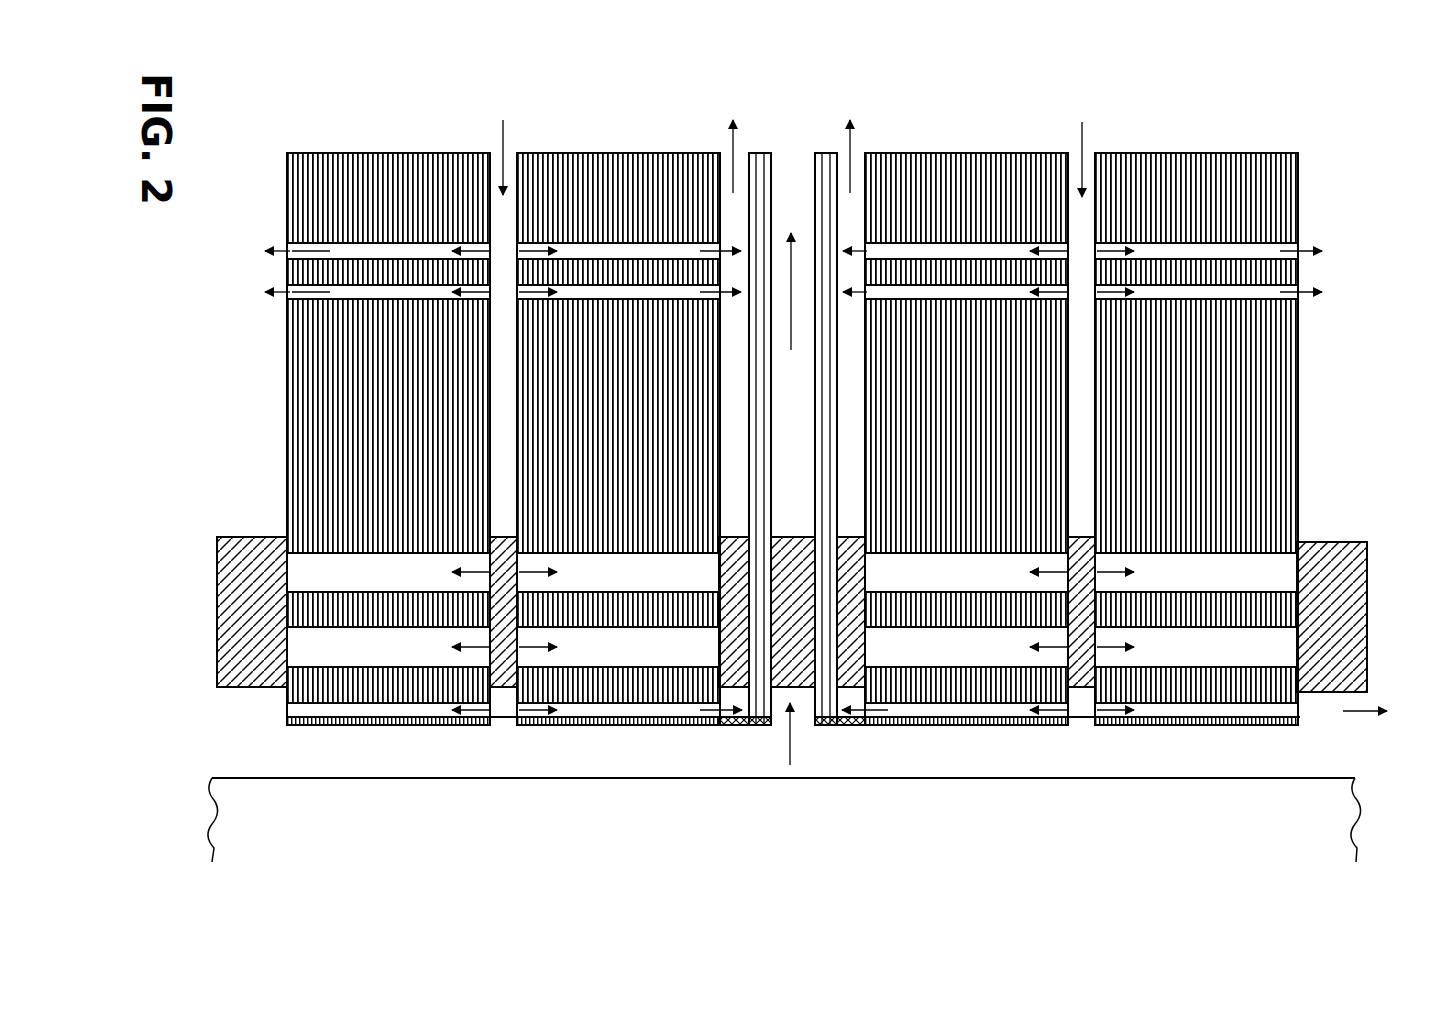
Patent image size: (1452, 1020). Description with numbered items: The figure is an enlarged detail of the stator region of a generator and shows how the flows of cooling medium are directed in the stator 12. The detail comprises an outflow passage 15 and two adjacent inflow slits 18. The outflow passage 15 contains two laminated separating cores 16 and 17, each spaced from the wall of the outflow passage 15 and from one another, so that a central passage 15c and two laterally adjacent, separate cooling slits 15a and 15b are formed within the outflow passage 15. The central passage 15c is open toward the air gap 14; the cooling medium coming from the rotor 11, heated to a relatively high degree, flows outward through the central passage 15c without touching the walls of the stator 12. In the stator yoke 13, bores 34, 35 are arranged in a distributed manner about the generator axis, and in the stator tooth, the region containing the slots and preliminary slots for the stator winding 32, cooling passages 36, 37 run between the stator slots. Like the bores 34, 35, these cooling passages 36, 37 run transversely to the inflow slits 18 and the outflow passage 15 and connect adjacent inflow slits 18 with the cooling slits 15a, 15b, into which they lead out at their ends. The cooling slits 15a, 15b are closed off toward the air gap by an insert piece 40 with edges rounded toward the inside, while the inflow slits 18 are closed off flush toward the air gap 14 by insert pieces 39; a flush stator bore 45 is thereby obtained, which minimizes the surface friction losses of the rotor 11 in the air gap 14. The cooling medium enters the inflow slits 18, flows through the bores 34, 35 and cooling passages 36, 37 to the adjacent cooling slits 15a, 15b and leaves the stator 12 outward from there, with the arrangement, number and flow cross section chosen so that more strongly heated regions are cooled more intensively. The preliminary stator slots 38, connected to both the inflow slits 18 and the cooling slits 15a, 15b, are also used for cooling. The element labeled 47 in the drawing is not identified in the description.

The rotor 11 is at (1197, 876).
The stator 12 is at (1358, 204).
The stator yoke 13 is at (1263, 462).
The air gap 14 is at (1265, 758).
The outflow passage 15 is at (822, 403).
The cooling slit 15a is at (726, 175).
The cooling slit 15b is at (857, 175).
The central passage 15c is at (792, 175).
The laminated separating core 16 is at (757, 330).
The laminated separating core 17 is at (826, 357).
The inflow slit 18 is at (499, 222).
The stator winding 32 is at (1340, 635).
The bore 34 is at (330, 248).
The bore 35 is at (333, 290).
The cooling passage 36 is at (313, 565).
The cooling passage 37 is at (313, 643).
The preliminary stator slot 38 is at (383, 705).
The insert piece 39 is at (505, 722).
The insert piece 40 is at (738, 727).
The flush stator bore 45 is at (607, 735).
The central support block 47 is at (803, 707).